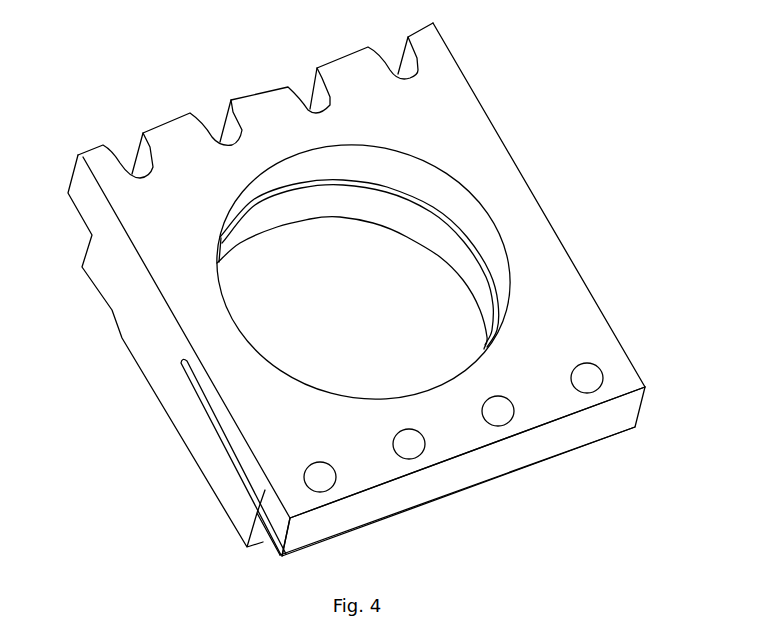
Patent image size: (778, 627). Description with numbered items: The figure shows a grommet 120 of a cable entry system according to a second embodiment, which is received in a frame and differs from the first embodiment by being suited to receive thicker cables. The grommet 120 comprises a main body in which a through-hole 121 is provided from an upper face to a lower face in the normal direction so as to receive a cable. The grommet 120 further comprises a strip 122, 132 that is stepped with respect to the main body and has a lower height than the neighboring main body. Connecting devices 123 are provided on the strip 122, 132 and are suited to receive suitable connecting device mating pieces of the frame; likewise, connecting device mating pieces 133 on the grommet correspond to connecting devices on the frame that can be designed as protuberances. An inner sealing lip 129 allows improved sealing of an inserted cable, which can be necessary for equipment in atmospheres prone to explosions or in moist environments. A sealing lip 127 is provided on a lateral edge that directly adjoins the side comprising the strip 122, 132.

The grommet 120 is at (518, 107).
The through-hole 121 is at (350, 340).
The strip 122 is at (84, 183).
The connecting device 123 is at (382, 82).
The sealing lip 127 is at (218, 445).
The inner sealing lip 129 is at (430, 218).
The strip 132 is at (325, 520).
The connecting device mating piece 133 is at (333, 479).